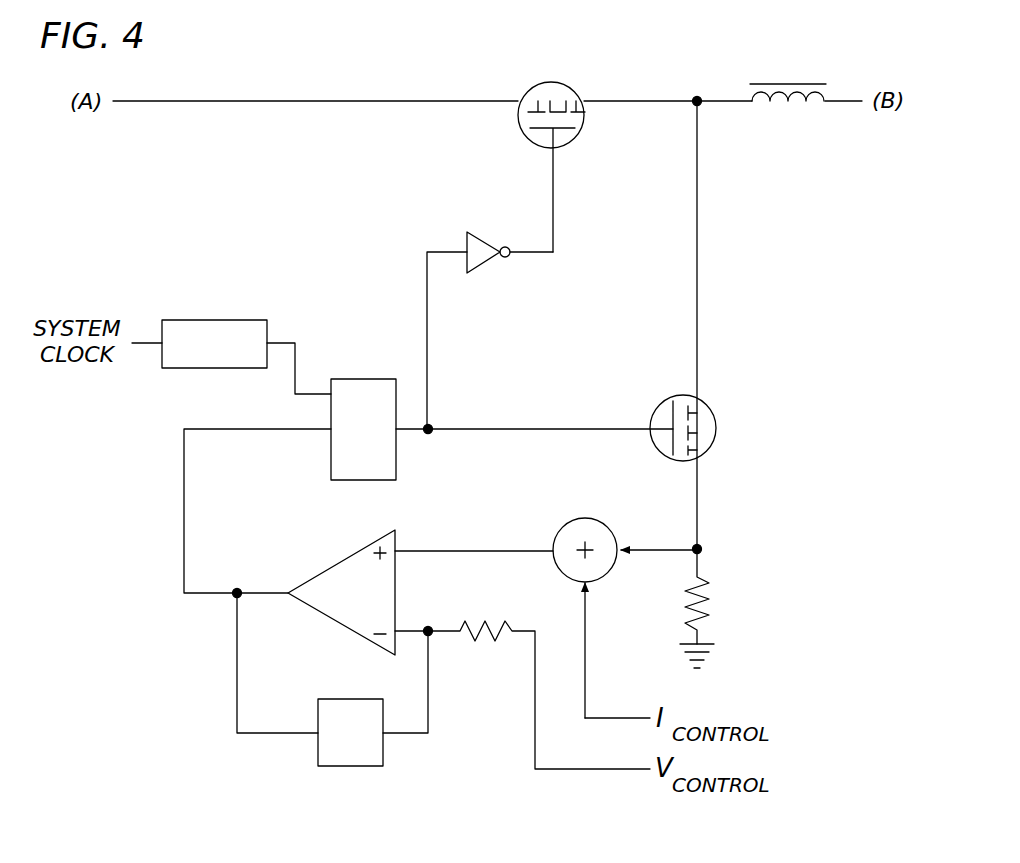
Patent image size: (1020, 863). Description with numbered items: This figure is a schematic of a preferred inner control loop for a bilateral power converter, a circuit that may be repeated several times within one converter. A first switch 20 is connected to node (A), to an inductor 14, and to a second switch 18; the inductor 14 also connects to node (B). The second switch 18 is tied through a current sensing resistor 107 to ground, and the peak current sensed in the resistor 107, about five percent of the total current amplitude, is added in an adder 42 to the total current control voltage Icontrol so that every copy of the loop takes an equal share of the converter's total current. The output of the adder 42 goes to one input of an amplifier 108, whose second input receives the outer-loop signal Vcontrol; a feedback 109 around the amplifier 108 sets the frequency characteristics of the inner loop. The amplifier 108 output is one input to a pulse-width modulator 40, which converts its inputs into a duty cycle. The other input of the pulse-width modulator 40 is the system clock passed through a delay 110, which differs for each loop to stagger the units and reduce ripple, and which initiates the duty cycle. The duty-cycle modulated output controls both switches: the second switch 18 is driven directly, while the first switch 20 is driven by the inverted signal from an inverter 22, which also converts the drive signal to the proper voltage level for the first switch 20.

The inductor 14 is at (792, 84).
The second switch 18 is at (714, 414).
The first switch 20 is at (562, 84).
The inverter 22 is at (478, 232).
The pulse-width modulator 40 is at (358, 378).
The adder 42 is at (567, 519).
The current sensing resistor 107 is at (712, 600).
The amplifier 108 is at (343, 558).
The feedback 109 is at (350, 766).
The delay 110 is at (215, 320).